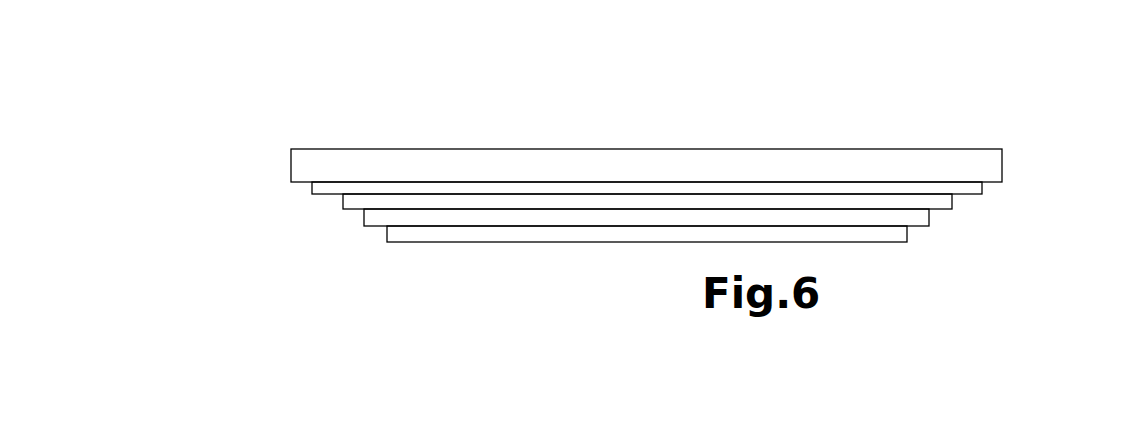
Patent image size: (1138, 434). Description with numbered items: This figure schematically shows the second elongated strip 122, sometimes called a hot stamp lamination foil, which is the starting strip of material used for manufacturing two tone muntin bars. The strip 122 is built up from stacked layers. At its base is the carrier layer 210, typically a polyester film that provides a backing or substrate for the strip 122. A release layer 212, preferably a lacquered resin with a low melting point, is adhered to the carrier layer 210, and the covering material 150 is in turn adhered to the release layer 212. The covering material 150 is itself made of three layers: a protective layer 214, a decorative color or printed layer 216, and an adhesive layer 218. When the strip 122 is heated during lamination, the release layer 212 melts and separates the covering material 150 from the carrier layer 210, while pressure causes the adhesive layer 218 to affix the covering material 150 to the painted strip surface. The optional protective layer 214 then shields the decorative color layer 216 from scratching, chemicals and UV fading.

The second elongated strip 122 is at (962, 106).
The covering material 150 is at (328, 220).
The carrier layer 210 is at (393, 166).
The release layer 212 is at (982, 189).
The protective layer 214 is at (342, 206).
The decorative color layer 216 is at (362, 227).
The adhesive layer 218 is at (452, 243).